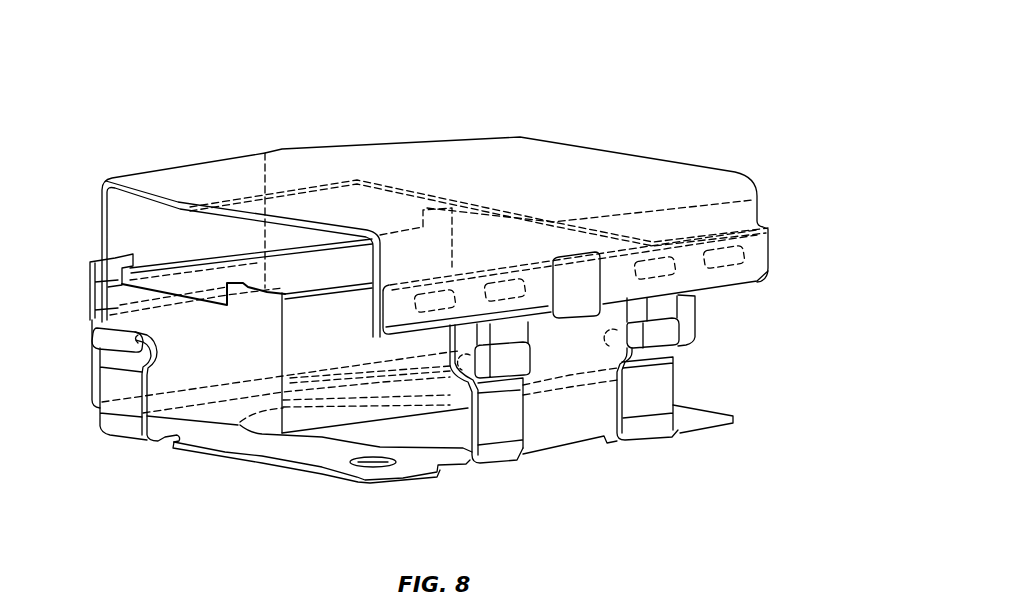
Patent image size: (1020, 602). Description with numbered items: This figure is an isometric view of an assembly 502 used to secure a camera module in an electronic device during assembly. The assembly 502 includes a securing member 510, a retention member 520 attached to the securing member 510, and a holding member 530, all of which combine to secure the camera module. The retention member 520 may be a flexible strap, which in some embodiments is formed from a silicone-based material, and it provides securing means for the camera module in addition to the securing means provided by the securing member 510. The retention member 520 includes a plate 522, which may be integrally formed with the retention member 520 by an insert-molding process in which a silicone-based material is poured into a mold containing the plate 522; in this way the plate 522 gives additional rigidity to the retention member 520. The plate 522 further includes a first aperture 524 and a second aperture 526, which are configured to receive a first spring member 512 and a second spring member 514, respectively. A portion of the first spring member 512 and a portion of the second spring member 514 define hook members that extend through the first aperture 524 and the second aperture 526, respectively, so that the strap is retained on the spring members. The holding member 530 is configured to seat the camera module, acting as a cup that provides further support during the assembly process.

The assembly 502 is at (778, 119).
The securing member 510 is at (298, 473).
The first spring member 512 is at (523, 387).
The second spring member 514 is at (673, 357).
The retention member 520 is at (228, 153).
The plate 522 is at (397, 187).
The first aperture 524 is at (553, 351).
The second aperture 526 is at (688, 309).
The holding member 530 is at (92, 352).